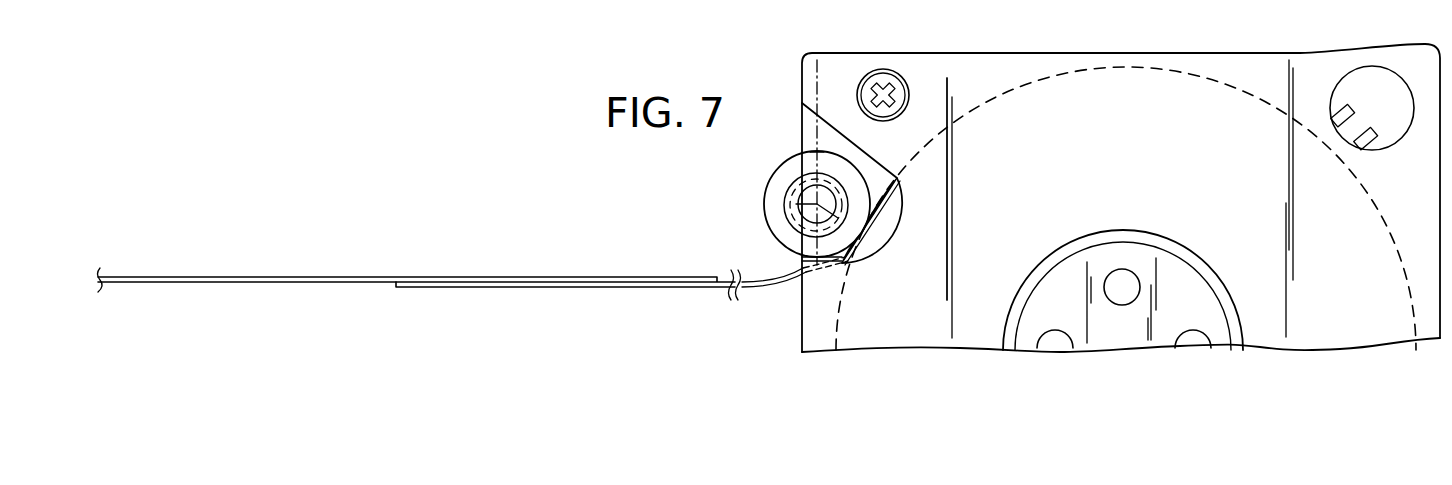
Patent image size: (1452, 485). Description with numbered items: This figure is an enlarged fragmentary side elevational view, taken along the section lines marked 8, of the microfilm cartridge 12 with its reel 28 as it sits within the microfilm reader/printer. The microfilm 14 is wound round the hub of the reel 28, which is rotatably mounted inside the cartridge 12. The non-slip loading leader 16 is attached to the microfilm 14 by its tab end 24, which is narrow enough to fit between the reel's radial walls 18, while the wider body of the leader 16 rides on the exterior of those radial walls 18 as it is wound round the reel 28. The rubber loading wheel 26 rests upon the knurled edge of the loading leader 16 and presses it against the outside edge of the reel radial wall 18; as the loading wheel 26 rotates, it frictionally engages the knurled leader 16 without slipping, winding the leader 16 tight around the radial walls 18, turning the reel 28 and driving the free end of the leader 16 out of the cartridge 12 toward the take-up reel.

The section line for FIG. 8 is at (875, 42).
The microfilm cartridge 12 is at (1062, 53).
The microfilm 14 is at (760, 293).
The non-slip loading leader 16 is at (292, 276).
The reel radial walls 18 is at (1000, 100).
The tab end 24 is at (516, 277).
The loading wheel 26 is at (763, 194).
The reel 28 is at (1182, 76).